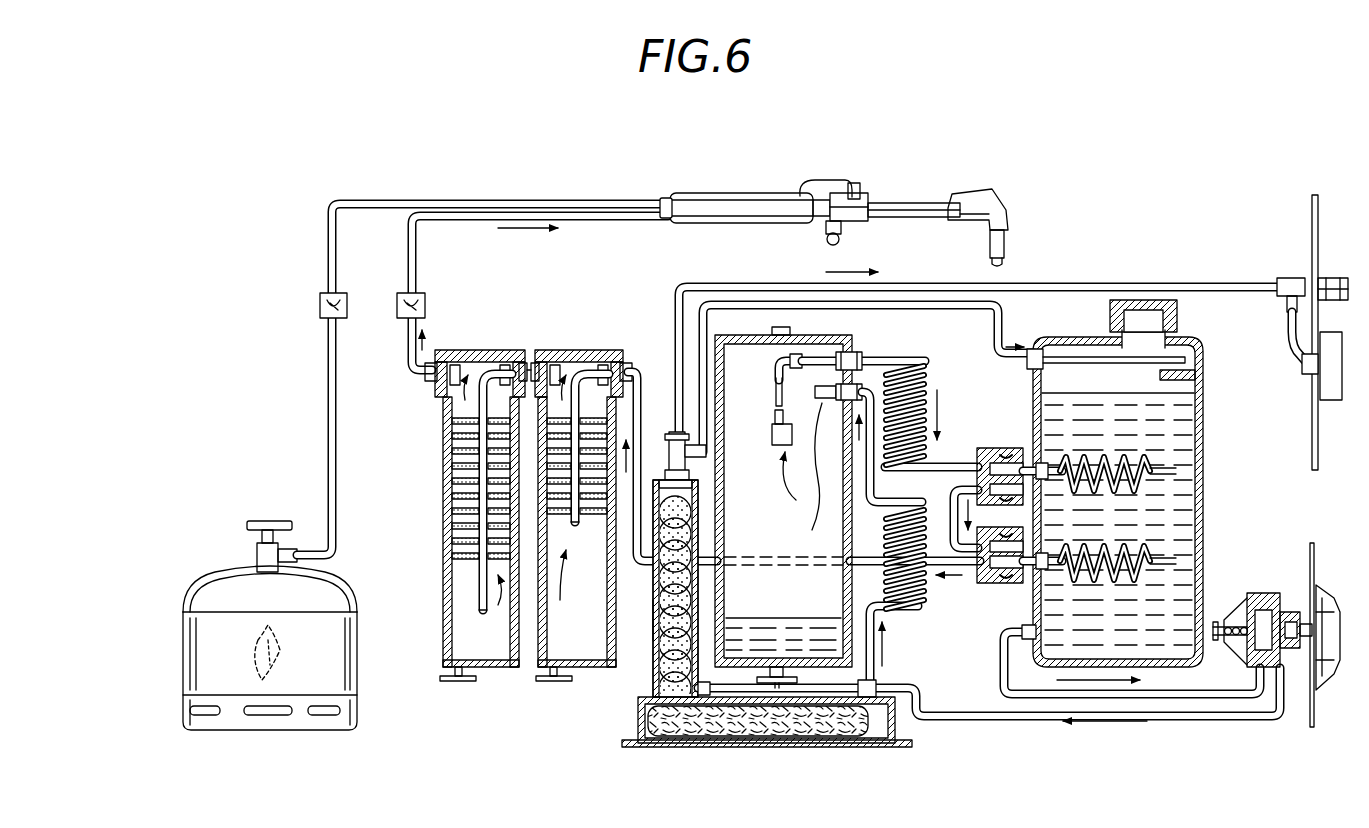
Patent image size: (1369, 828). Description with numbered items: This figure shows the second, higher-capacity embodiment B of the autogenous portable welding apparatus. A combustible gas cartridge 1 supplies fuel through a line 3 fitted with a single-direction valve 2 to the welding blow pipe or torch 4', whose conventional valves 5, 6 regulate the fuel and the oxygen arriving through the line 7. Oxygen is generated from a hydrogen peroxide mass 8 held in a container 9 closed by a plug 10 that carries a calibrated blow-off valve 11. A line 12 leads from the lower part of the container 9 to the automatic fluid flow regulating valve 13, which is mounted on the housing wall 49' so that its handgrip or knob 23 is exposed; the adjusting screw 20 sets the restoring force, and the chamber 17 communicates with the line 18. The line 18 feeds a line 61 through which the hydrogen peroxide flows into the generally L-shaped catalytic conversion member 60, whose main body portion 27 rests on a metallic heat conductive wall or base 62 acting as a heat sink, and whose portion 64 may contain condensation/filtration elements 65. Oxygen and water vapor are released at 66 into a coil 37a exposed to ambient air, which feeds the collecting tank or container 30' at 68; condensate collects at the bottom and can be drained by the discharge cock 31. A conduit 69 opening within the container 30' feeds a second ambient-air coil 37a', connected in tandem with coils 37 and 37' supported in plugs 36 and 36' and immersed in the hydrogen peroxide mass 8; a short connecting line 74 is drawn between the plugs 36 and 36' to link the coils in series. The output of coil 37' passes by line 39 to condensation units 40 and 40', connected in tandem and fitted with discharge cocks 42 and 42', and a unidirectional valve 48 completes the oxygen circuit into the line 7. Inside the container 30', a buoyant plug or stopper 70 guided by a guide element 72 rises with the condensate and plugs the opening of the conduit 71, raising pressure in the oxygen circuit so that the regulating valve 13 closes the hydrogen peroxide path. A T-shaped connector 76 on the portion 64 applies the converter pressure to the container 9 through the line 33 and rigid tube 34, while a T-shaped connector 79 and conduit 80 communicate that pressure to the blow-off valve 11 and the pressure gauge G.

The combustible gas cartridge 1 is at (206, 598).
The single-direction valve 2 is at (320, 305).
The line 3 is at (498, 207).
The welding blow pipe or torch 4' is at (764, 193).
The valve 5 is at (848, 190).
The valve 6 is at (839, 235).
The line 7 is at (418, 265).
The hydrogen peroxide 8 is at (1180, 435).
The container 9 is at (1209, 405).
The plug 10 is at (1178, 300).
The calibrated valve 11 is at (1336, 280).
The line 12 is at (998, 673).
The automatic fluid flow regulating valve 13 is at (1283, 591).
The chamber 17 is at (1085, 284).
The line 18 is at (987, 719).
The adjusting screw 20 is at (1214, 623).
The handgrip or knob 23 is at (1322, 593).
The catalytic section 27 is at (818, 740).
The collecting tank or container 30' is at (793, 489).
The discharge valve or cock 31 is at (776, 686).
The line 33 is at (918, 309).
The rigid tube 34 is at (1082, 356).
The plug 36 is at (999, 461).
The plug 36' is at (1000, 575).
The coil 37 is at (1134, 474).
The coil 37' is at (1136, 553).
The coil 37a is at (915, 596).
The coil 37a' is at (936, 410).
The line 39 is at (641, 376).
The condensation unit 40 is at (579, 493).
The condensation unit 40' is at (480, 493).
The discharge valve or cock 42 is at (554, 694).
The discharge valve or cock 42' is at (459, 694).
The unidirectional valve 48 is at (427, 305).
The housing wall 49' is at (1295, 323).
The catalytic conversion member 60 is at (636, 720).
The line 61 is at (904, 674).
The metallic heat conductive wall or base 62 is at (625, 750).
The portion 64 is at (650, 619).
The condensation/filtration elements 65 is at (655, 641).
The release point 66 is at (874, 703).
The output of cooling coil 68 is at (816, 395).
The conduit 69 is at (776, 366).
The plug or stopper 70 is at (772, 447).
The conduit 71 is at (776, 396).
The guide element 72 is at (776, 420).
The pipe 74 is at (952, 505).
The T-shaped connector 76 is at (669, 449).
The T-shaped connector 79 is at (1289, 278).
The conduit 80 is at (1284, 344).
The second embodiment B is at (1030, 198).
The pressure gauge G is at (1339, 343).